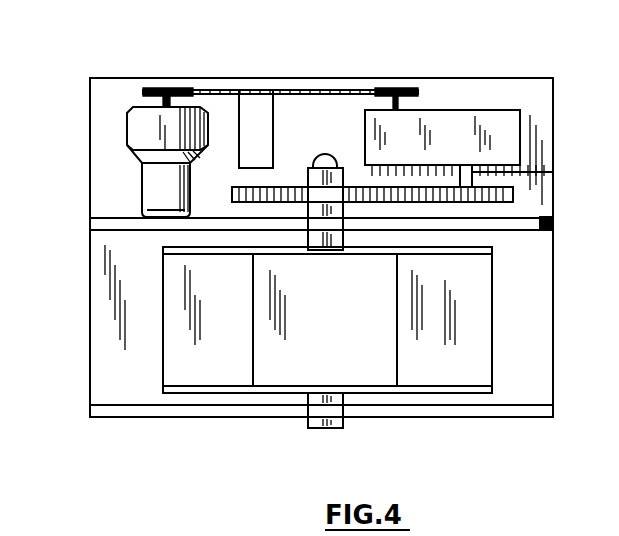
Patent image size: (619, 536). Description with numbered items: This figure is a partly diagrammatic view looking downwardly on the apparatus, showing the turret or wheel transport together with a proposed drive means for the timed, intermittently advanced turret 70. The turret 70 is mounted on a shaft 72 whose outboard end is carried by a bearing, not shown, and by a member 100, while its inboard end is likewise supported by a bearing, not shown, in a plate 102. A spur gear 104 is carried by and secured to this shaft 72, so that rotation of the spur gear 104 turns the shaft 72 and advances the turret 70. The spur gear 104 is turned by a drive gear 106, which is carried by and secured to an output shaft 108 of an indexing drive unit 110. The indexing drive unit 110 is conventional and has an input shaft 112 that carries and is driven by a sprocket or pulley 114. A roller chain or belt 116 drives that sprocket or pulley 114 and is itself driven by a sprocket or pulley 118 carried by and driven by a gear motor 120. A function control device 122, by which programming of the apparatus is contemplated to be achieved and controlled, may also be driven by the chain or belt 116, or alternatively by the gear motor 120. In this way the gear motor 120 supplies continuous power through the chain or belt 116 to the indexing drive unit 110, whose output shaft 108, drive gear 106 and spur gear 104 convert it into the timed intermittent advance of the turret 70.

The turret 70 is at (483, 327).
The shaft 72 is at (340, 428).
The member 100 is at (552, 418).
The plate 102 is at (553, 233).
The spur gear 104 is at (253, 203).
The drive gear 106 is at (513, 194).
The output shaft 108 is at (470, 174).
The indexing drive unit 110 is at (522, 112).
The input shaft 112 is at (400, 110).
The sprocket or pulley 114 is at (415, 89).
The roller chain or belt 116 is at (313, 90).
The sprocket or pulley 118 is at (150, 89).
The gear motor 120 is at (132, 132).
The function control device 122 is at (257, 108).